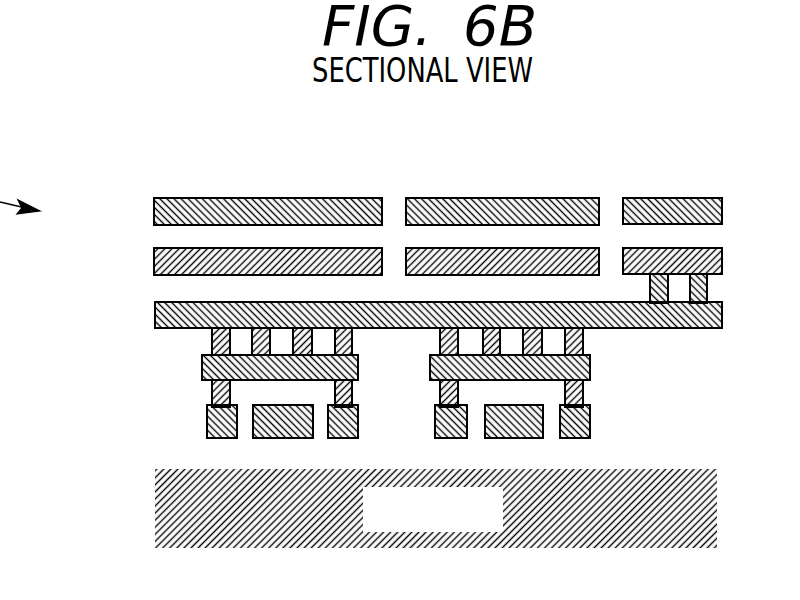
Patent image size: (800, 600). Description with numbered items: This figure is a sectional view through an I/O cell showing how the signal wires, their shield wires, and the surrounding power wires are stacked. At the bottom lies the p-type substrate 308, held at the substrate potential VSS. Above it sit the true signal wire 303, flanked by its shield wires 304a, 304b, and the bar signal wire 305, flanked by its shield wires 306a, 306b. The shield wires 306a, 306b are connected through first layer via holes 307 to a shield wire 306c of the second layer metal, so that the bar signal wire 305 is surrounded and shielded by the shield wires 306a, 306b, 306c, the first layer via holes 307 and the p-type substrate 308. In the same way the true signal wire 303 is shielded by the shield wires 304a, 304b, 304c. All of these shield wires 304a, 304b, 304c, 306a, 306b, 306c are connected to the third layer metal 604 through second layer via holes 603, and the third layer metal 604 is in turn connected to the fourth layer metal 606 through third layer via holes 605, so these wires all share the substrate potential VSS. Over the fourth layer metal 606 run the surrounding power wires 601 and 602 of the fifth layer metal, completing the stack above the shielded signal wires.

The surrounding power wire 601 is at (268, 199).
The surrounding power wire 602 is at (672, 198).
The second layer via hole 603 is at (210, 342).
The third layer metal 604 is at (722, 313).
The third layer via hole 605 is at (707, 285).
The fourth layer metal 606 is at (722, 258).
The true signal wire 303 is at (503, 438).
The shield wire 304a is at (435, 425).
The shield wire 304b is at (590, 420).
The shield wire 304c is at (590, 366).
The bar signal wire 305 is at (283, 440).
The shield wire 306a is at (207, 425).
The shield wire 306b is at (345, 440).
The shield wire 306c is at (203, 368).
The first layer via hole 307 is at (210, 393).
The p-type substrate 308 is at (717, 505).